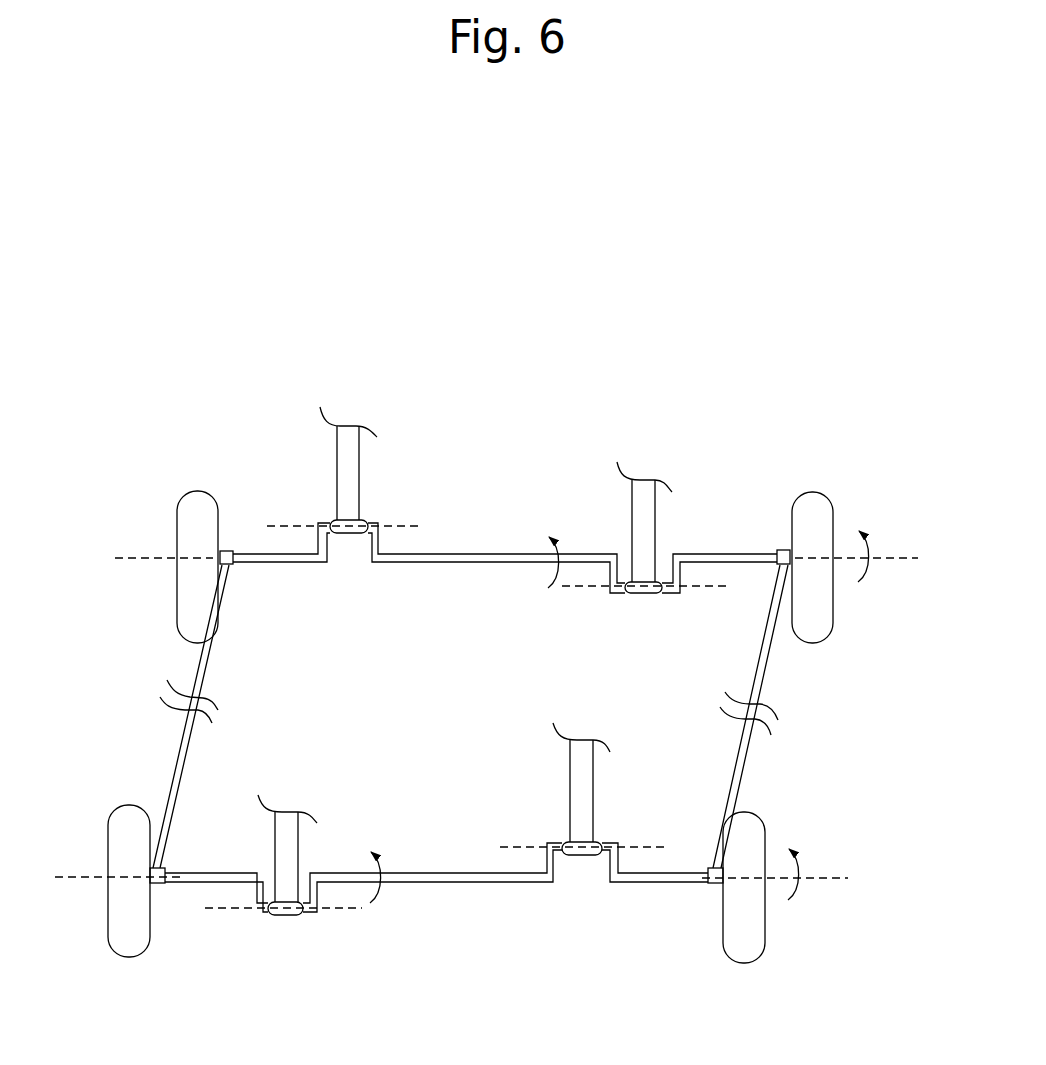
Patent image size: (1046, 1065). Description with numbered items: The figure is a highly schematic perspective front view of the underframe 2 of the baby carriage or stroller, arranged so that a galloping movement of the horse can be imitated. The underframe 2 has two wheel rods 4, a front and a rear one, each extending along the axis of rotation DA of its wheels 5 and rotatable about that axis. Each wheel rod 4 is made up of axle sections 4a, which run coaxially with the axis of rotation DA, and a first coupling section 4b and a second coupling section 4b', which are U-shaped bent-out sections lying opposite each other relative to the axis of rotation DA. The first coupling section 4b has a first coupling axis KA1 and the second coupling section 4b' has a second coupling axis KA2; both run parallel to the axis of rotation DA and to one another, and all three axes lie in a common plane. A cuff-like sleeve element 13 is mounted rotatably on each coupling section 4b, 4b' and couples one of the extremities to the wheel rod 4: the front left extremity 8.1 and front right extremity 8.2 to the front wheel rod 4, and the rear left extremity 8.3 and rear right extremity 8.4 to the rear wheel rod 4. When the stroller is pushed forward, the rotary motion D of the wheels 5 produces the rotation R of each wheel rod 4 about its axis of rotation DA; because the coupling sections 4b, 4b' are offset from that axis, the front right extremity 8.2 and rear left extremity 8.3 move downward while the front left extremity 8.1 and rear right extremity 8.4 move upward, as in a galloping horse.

The underframe 2 is at (146, 338).
The wheel rod 4 is at (458, 562).
The axle section 4a is at (503, 545).
The first coupling section 4b is at (614, 717).
The second coupling section 4b' is at (384, 723).
The wheel 5 is at (193, 518).
The front left extremity 8.1 is at (587, 780).
The front right extremity 8.2 is at (293, 837).
The rear left extremity 8.3 is at (647, 503).
The rear right extremity 8.4 is at (345, 450).
The cuff-like sleeve element 13 is at (350, 530).
The first coupling axis KA1 is at (629, 719).
The second coupling axis KA2 is at (306, 717).
The axis of rotation DA is at (501, 704).
The rotation of the wheel rod R is at (473, 708).
The rotary motion of the wheels D is at (838, 710).